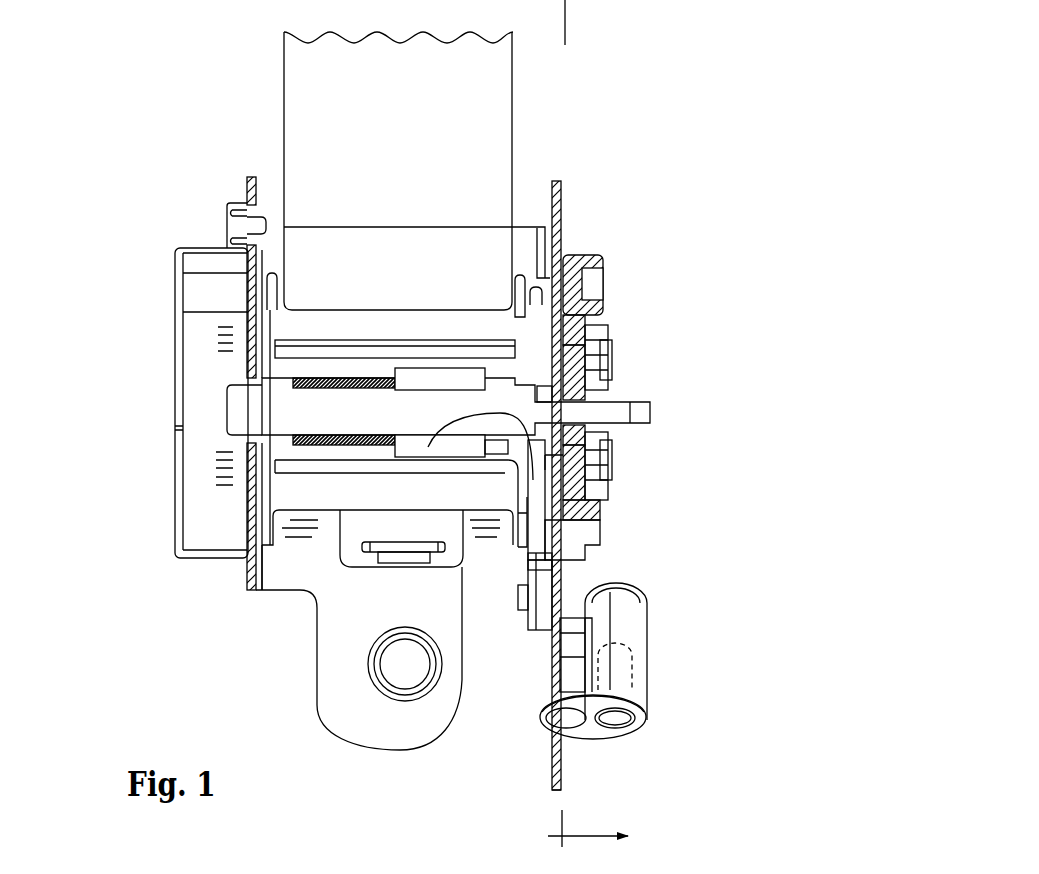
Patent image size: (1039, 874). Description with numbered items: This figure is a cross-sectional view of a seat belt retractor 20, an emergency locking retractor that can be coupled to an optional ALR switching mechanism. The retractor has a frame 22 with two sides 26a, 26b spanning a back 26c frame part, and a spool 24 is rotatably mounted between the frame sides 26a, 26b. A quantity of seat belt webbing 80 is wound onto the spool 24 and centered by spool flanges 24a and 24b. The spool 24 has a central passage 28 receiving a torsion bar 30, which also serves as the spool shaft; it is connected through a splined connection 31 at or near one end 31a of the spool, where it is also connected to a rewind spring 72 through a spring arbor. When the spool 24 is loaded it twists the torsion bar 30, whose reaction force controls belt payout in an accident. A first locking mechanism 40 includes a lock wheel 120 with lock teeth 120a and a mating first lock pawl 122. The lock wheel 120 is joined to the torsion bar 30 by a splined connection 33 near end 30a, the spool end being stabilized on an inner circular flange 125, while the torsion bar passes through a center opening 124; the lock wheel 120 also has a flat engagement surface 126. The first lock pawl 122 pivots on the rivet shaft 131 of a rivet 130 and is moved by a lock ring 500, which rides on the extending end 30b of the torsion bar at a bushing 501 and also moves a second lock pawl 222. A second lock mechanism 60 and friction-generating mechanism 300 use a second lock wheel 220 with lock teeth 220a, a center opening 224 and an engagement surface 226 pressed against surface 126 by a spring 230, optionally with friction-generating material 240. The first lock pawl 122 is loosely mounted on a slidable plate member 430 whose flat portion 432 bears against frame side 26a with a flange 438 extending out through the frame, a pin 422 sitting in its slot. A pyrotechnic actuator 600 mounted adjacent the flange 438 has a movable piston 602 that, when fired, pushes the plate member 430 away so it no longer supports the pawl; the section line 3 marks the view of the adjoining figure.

The seat belt retractor 20 is at (280, 629).
The frame 22 is at (340, 666).
The spool 24 is at (302, 306).
The spool flange 24a is at (513, 290).
The spool flange 24b is at (271, 273).
The frame side 26a is at (563, 186).
The frame side 26b is at (276, 225).
The back frame part 26c is at (287, 592).
The central passage 28 is at (343, 376).
The torsion bar 30 is at (322, 413).
The end of torsion bar 30a is at (603, 392).
The extending end of torsion bar 30b is at (630, 406).
The splined connection 31 is at (265, 373).
The end of spool 31a is at (240, 423).
The splined connection 33 is at (477, 447).
The first locking mechanism 40 is at (506, 522).
The second lock mechanism 60 is at (603, 313).
The rewind spring 72 is at (210, 480).
The seat belt webbing 80 is at (500, 100).
The lock wheel 120 is at (518, 480).
The lock teeth 120a is at (485, 315).
The first lock pawl 122 is at (528, 500).
The center opening 124 is at (462, 425).
The inner circular flange 125 is at (515, 452).
The engagement surface 126 is at (482, 368).
The rivet 130 is at (585, 618).
The rivet shaft 131 is at (548, 596).
The second lock wheel 220 is at (612, 520).
The lock teeth 220a is at (603, 300).
The second lock pawl 222 is at (603, 220).
The center opening 224 is at (606, 352).
The engagement surface 226 is at (606, 472).
The spring 230 is at (605, 437).
The friction-generating material 240 is at (618, 502).
The friction-generating mechanism 300 is at (612, 450).
The pin 422 is at (565, 678).
The plate member 430 is at (618, 748).
The flat portion 432 is at (532, 592).
The flange 438 is at (636, 718).
The lock ring 500 is at (607, 260).
The bushing 501 is at (655, 412).
The pyrotechnic actuator 600 is at (652, 682).
The movable piston 602 is at (648, 656).
The section line 3- 3 is at (588, 828).